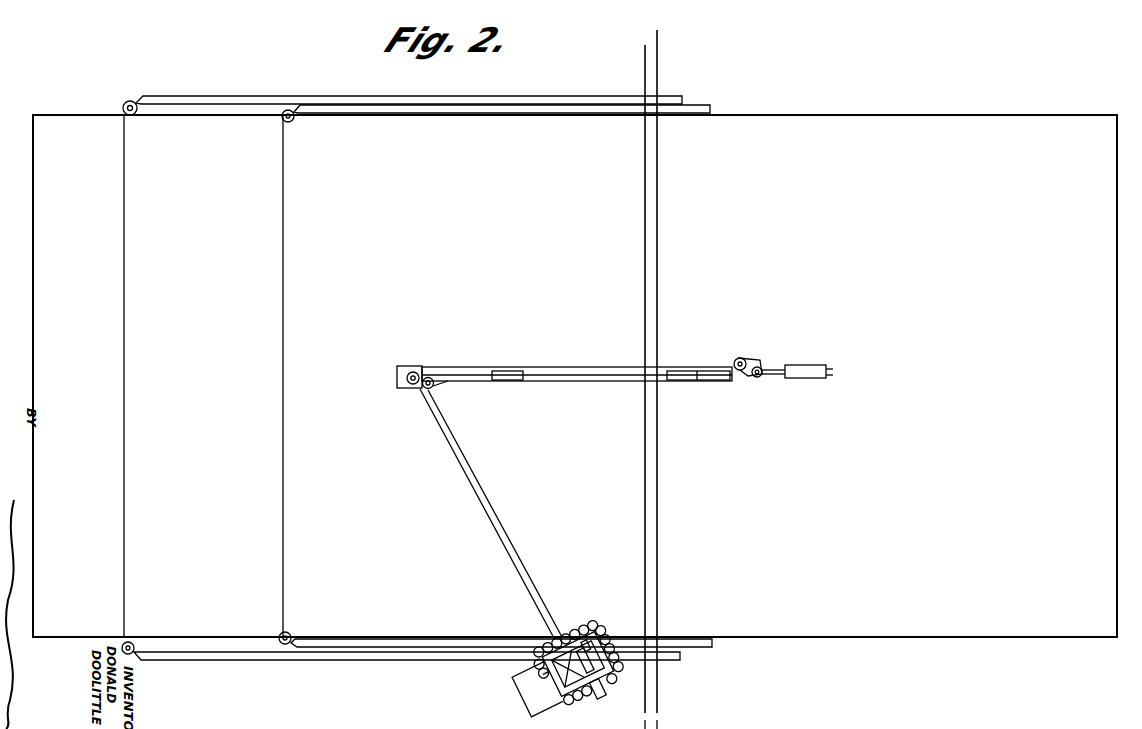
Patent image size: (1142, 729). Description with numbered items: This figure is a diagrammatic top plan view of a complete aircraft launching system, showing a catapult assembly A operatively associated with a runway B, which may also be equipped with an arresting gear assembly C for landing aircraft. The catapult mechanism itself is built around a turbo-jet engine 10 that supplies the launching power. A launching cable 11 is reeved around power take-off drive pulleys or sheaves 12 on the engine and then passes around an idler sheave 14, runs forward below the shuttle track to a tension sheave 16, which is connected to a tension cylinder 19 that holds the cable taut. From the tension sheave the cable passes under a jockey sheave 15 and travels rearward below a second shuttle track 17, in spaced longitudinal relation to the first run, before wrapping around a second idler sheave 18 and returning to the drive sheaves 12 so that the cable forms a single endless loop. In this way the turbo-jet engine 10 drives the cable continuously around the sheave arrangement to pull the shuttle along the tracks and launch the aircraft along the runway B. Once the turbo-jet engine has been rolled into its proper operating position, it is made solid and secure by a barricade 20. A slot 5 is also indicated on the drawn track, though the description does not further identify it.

The slot 5 is at (506, 381).
The turbo-jet engine 10 is at (590, 641).
The launching cable 11 is at (490, 502).
The power take-off drive pulleys or sheaves 12 is at (598, 632).
The idler sheave 14 is at (432, 388).
The jockey sheave 15 is at (758, 348).
The tension sheave 16 is at (756, 378).
The second shuttle track 17 is at (474, 366).
The second idler sheave 18 is at (432, 350).
The tension cylinder 19 is at (822, 360).
The barricade 20 is at (618, 684).
The catapult assembly A is at (528, 690).
The runway B is at (575, 376).
The arresting gear assembly C is at (283, 612).